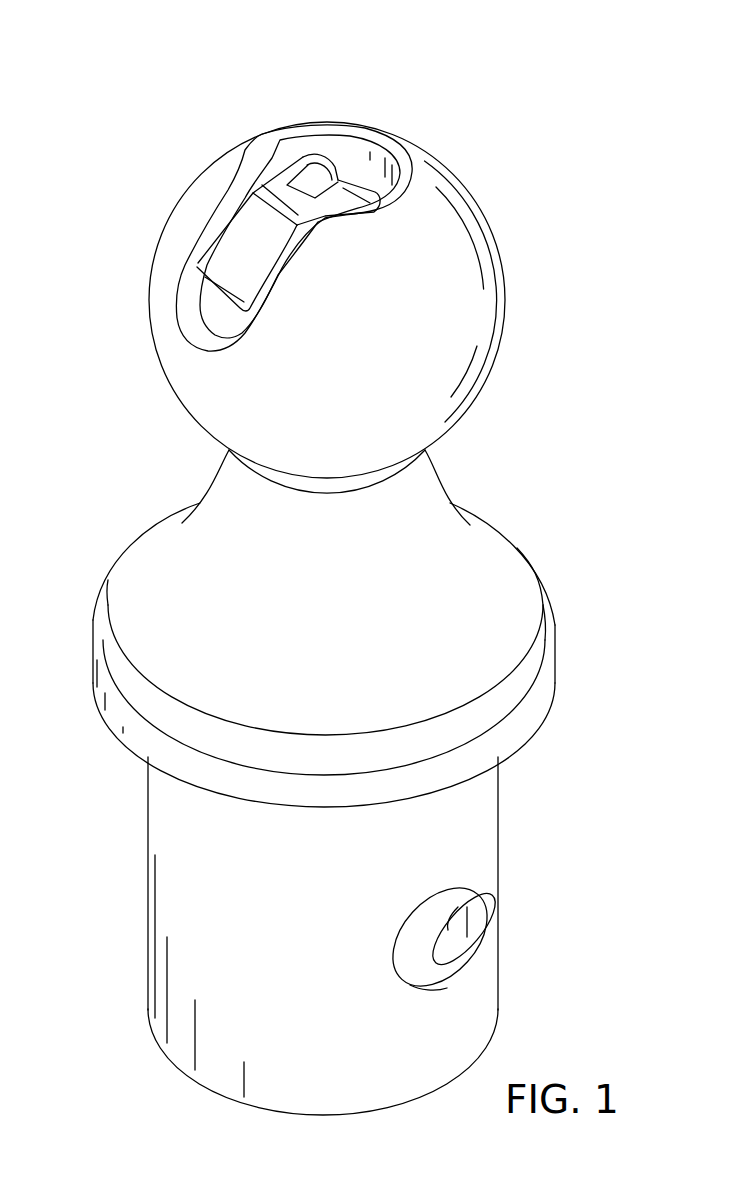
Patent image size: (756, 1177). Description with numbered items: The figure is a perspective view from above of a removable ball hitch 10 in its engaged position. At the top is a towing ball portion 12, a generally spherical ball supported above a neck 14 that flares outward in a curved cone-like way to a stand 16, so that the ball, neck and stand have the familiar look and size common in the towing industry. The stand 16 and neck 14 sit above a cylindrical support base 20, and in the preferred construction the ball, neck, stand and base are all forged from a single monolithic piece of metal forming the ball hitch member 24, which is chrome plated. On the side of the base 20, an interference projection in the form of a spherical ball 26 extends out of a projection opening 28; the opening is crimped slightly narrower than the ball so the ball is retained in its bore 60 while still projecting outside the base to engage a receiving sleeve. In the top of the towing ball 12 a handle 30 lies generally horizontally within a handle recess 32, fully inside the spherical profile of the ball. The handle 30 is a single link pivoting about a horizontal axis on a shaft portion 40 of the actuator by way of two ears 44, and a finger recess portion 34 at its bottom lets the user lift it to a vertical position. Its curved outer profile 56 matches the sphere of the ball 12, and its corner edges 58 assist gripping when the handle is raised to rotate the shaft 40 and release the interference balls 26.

The removable ball hitch 10 is at (620, 182).
The towing ball portion 12 is at (423, 355).
The neck 14 is at (413, 494).
The stand 16 is at (517, 726).
The support base 20 is at (448, 835).
The ball hitch member 24 is at (152, 601).
The interference projection 26 is at (475, 892).
The projection opening 28 is at (424, 991).
The handle 30 is at (275, 192).
The handle recess 32 is at (280, 157).
The finger recess portion 34 is at (217, 317).
The shaft portion 40 is at (320, 183).
The ears 44 is at (305, 160).
The curved outer profile 56 is at (233, 255).
The corner edges 58 is at (235, 208).
The bores for the interference balls 60 is at (445, 990).